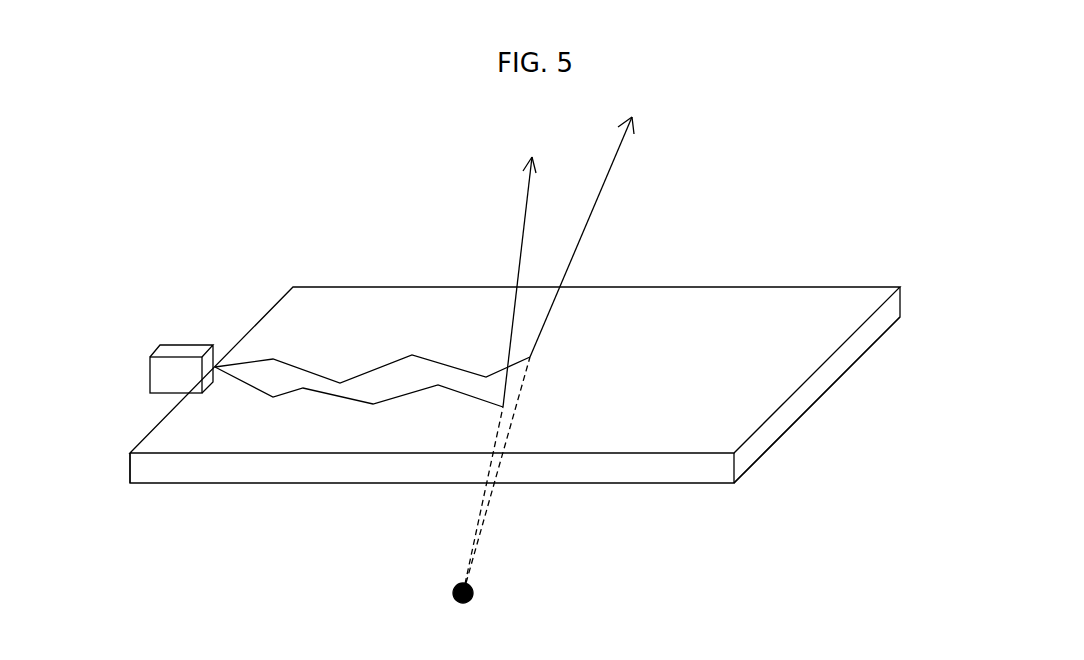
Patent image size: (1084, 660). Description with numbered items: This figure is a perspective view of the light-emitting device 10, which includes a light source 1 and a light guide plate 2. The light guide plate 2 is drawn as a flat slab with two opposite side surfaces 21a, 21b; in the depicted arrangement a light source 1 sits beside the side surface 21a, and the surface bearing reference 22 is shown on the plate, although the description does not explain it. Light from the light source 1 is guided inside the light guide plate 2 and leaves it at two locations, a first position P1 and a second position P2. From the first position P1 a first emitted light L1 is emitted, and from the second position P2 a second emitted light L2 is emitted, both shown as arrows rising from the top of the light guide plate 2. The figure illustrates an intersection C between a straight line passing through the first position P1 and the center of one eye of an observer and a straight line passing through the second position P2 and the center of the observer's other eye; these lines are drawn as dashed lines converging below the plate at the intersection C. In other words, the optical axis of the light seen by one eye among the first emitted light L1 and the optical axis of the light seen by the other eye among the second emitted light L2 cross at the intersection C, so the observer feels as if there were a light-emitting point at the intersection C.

The light-emitting device 10 is at (817, 162).
The light guide plate 2 is at (730, 285).
The light exit surface 22 is at (780, 378).
The side surface 21b is at (792, 413).
The side surface 21a is at (128, 463).
The light source 1 is at (180, 353).
The first emitted light L1 is at (607, 177).
The second emitted light L2 is at (522, 213).
The first position P1 is at (530, 357).
The second position P2 is at (503, 408).
The intersection C is at (473, 590).